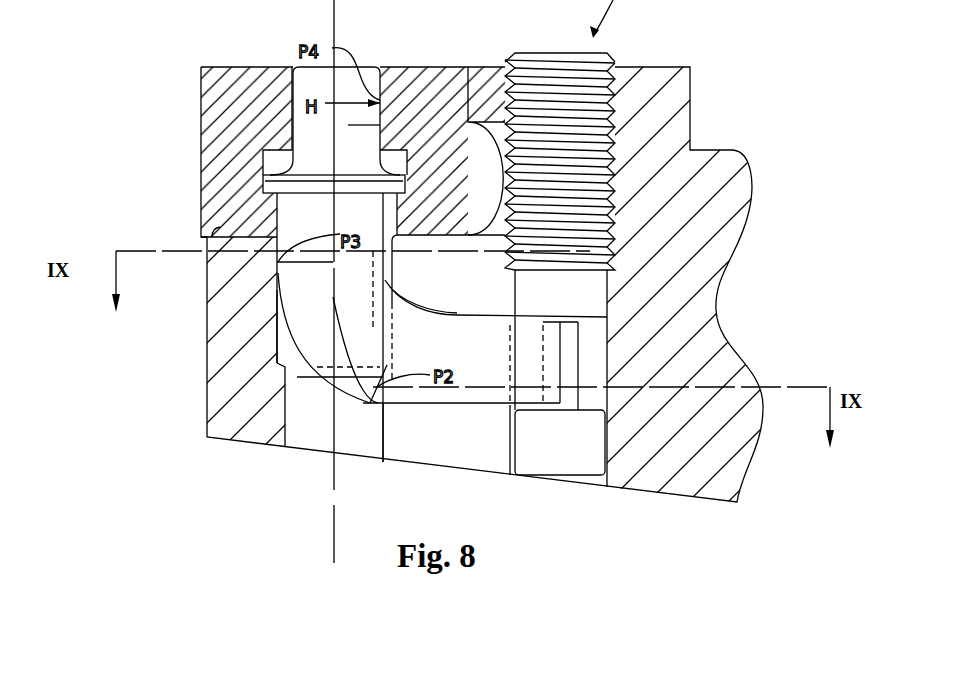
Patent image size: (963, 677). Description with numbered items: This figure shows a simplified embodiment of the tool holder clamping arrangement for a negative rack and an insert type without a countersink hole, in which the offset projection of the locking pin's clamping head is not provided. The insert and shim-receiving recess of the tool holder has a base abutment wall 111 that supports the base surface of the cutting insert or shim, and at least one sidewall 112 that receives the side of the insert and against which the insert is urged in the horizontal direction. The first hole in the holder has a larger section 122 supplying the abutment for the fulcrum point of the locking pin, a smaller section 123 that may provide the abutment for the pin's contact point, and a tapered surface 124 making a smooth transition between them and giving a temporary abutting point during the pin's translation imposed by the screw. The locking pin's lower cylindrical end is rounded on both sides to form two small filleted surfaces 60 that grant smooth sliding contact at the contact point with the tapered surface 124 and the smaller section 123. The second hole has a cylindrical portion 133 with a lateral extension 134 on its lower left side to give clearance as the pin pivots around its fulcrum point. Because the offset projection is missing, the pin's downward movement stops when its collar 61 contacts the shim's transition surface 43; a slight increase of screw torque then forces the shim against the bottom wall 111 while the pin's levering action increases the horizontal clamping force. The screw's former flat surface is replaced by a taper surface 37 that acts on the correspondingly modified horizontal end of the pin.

The taper surface 37 is at (578, 318).
The transition surface 43 is at (263, 182).
The filleted surfaces 60 is at (367, 401).
The collar 61 is at (270, 175).
The base abutment wall 111 is at (212, 230).
The sidewall 112 is at (468, 95).
The larger section 122 is at (282, 345).
The smaller section 123 is at (383, 432).
The tapered surface 124 is at (285, 368).
The cylindrical portion of the hole 133 is at (603, 398).
The lateral extension 134 is at (510, 452).